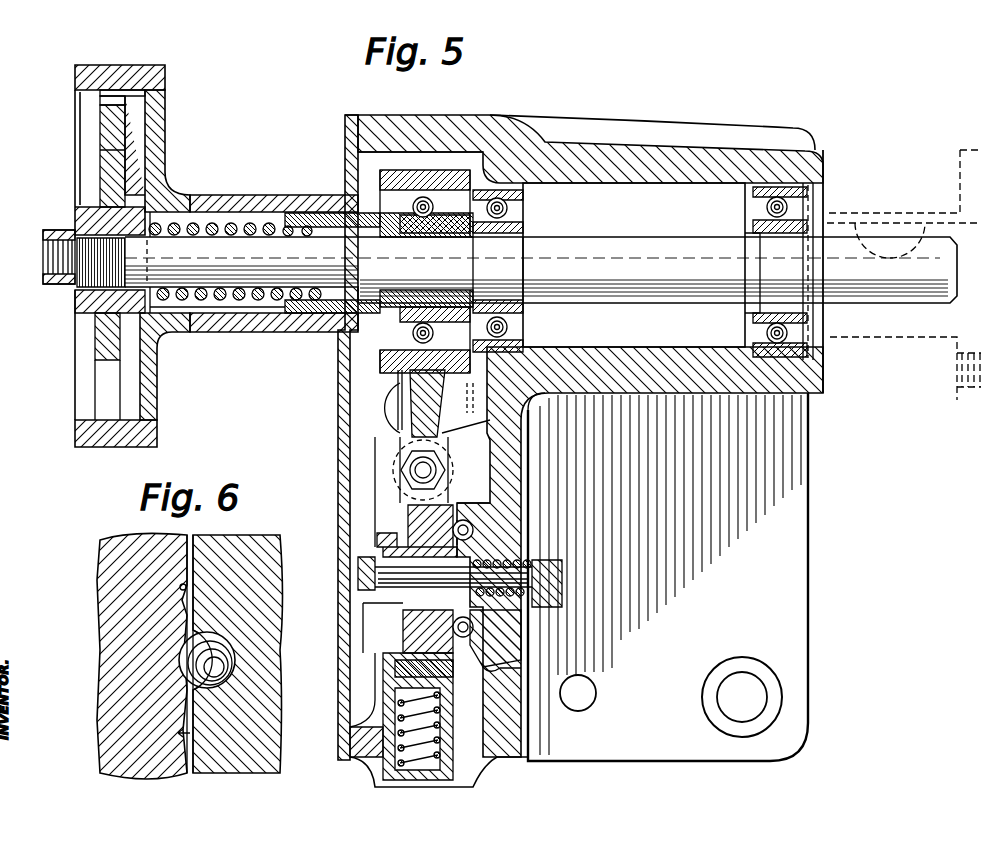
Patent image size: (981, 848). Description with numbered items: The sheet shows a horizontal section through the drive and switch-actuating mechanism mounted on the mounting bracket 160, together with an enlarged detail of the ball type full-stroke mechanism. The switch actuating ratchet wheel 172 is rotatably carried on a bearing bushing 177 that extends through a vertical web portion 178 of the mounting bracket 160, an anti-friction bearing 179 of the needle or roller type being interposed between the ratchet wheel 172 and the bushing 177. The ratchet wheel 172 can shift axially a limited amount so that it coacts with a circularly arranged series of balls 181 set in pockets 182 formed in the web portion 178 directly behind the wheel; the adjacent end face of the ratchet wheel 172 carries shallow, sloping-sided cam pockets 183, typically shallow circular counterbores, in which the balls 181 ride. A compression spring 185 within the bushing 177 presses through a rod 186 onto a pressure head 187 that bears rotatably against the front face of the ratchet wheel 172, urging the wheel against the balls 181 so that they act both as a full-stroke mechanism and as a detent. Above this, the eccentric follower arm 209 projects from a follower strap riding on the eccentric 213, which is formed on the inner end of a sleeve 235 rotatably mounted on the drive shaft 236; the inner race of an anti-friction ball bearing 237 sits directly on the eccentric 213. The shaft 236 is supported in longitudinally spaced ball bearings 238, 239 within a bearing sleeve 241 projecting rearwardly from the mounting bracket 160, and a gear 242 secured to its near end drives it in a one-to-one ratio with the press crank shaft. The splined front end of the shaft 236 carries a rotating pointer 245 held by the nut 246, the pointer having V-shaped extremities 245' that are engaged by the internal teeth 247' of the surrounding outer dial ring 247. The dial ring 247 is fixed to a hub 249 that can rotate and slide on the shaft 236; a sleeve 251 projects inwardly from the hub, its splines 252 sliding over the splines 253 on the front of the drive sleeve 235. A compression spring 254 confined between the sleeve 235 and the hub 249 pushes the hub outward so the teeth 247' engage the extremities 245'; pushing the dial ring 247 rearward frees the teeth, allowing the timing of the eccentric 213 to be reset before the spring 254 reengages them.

In FIG. 5, the mounting bracket 160 is at (795, 648).
In FIG. 5, the switch actuating ratchet wheel 172 is at (420, 520).
In FIG. 5, the bearing bushing 177 is at (513, 558).
In FIG. 5, the vertical web portion 178 is at (492, 522).
In FIG. 6, the anti-friction bearing 179 is at (261, 654).
In FIG. 5, the balls 181 is at (525, 662).
In FIG. 6, the balls 181 is at (232, 682).
In FIG. 6, the pockets 182 is at (200, 640).
In FIG. 5, the cam pockets 183 is at (505, 670).
In FIG. 6, the cam pockets 183 is at (180, 590).
In FIG. 5, the compression spring 185 is at (540, 566).
In FIG. 5, the rod 186 is at (520, 634).
In FIG. 5, the pressure head 187 is at (397, 551).
In FIG. 5, the eccentric follower arm 209 is at (412, 418).
In FIG. 5, the eccentric 213 is at (430, 300).
In FIG. 5, the sleeve 235 is at (392, 237).
In FIG. 5, the drive shaft 236 is at (668, 262).
In FIG. 5, the anti-friction ball bearing 237 is at (405, 348).
In FIG. 5, the ball bearing 238 is at (510, 210).
In FIG. 5, the ball bearing 239 is at (768, 207).
In FIG. 5, the bearing sleeve 241 is at (640, 152).
In FIG. 5, the gear 242 is at (980, 90).
In FIG. 5, the rotating pointer 245 is at (73, 262).
In FIG. 5, the V-shaped extremities 245' is at (71, 115).
In FIG. 5, the nut 246 is at (72, 232).
In FIG. 5, the outer dial ring 247 is at (93, 75).
In FIG. 5, the internal teeth 247' is at (81, 99).
In FIG. 5, the hub 249 is at (165, 205).
In FIG. 5, the sleeve 251 is at (200, 333).
In FIG. 5, the splines 252 is at (322, 212).
In FIG. 5, the splines 253 is at (262, 333).
In FIG. 5, the compression spring 254 is at (232, 222).